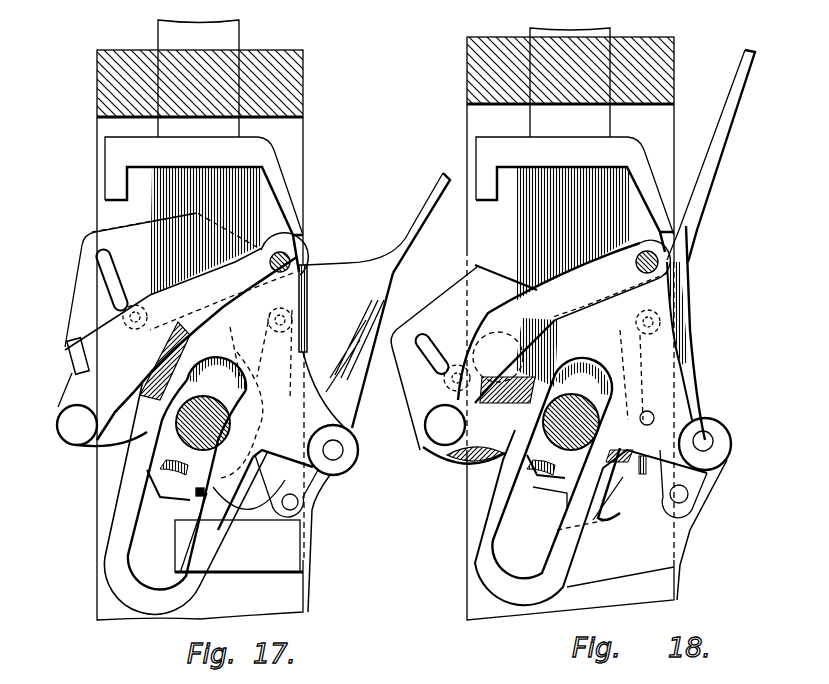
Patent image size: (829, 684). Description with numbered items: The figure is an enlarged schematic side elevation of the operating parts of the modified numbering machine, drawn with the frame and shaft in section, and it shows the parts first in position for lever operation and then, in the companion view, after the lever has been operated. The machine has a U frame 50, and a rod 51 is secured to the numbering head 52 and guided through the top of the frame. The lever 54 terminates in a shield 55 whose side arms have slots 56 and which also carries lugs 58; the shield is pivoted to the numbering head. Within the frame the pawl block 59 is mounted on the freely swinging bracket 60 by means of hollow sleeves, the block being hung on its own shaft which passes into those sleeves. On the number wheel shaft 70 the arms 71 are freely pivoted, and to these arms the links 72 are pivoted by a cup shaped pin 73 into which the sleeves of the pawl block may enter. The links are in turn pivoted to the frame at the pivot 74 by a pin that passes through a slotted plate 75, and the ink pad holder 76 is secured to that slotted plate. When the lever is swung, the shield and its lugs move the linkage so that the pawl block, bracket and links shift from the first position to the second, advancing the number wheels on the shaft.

In FIG. 17, the U frame 50 is at (103, 505).
In FIG. 18, the U frame 50 is at (480, 500).
In FIG. 17, the rod 51 is at (214, 38).
In FIG. 18, the rod 51 is at (602, 128).
In FIG. 17, the numbering head 52 is at (257, 210).
In FIG. 18, the numbering head 52 is at (572, 277).
In FIG. 17, the lever 54 is at (422, 203).
In FIG. 18, the lever 54 is at (705, 182).
In FIG. 17, the shield 55 is at (346, 346).
In FIG. 17, the slots 56 is at (100, 264).
In FIG. 18, the slots 56 is at (426, 336).
In FIG. 17, the lugs 58 is at (210, 500).
In FIG. 18, the lugs 58 is at (598, 522).
In FIG. 17, the pawl block 59 is at (78, 362).
In FIG. 18, the pawl block 59 is at (422, 449).
In FIG. 17, the bracket 60 is at (98, 323).
In FIG. 18, the bracket 60 is at (468, 392).
In FIG. 17, the number wheel shaft 70 is at (208, 497).
In FIG. 18, the number wheel shaft 70 is at (591, 492).
In FIG. 17, the arms 71 is at (124, 446).
In FIG. 17, the links 72 is at (186, 355).
In FIG. 18, the links 72 is at (564, 330).
In FIG. 17, the cup shaped pin 73 is at (74, 441).
In FIG. 18, the cup shaped pin 73 is at (440, 420).
In FIG. 17, the pivot 74 is at (235, 260).
In FIG. 18, the pivot 74 is at (660, 262).
In FIG. 17, the slotted plate 75 is at (264, 316).
In FIG. 18, the slotted plate 75 is at (626, 325).
In FIG. 17, the ink pad holder 76 is at (285, 533).
In FIG. 18, the ink pad holder 76 is at (660, 537).